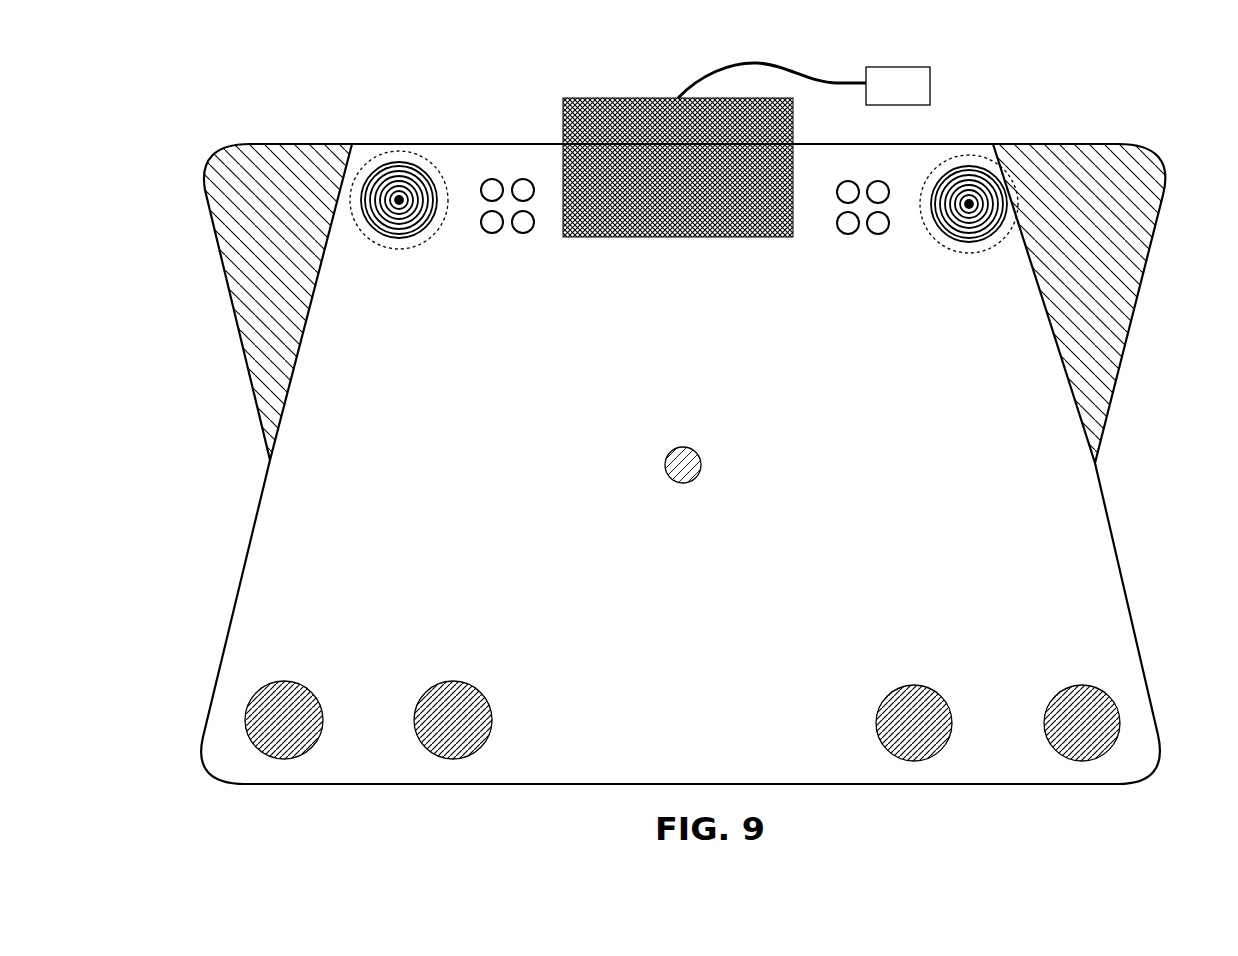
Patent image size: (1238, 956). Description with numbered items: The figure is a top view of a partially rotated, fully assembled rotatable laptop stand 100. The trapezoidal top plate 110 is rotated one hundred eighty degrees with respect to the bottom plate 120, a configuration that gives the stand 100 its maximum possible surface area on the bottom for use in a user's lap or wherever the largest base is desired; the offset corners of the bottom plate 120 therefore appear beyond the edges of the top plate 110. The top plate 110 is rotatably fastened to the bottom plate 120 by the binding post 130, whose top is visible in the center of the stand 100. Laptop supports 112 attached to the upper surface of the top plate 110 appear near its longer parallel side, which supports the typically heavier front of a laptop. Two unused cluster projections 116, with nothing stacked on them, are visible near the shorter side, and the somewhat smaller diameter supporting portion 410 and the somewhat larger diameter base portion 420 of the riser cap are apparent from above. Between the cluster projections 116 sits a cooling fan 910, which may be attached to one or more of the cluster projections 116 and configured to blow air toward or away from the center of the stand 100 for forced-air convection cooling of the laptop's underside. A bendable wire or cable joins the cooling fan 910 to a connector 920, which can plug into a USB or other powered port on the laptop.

The rotatable laptop stand 100 is at (709, 423).
The top plate 110 is at (1090, 563).
The bottom plate 120 is at (1092, 379).
The supporting portion 410 is at (410, 168).
The base portion 420 is at (412, 243).
The cluster projections 116 is at (503, 205).
The cooling fan 910 is at (730, 222).
The connector 920 is at (910, 90).
The binding post 130 is at (690, 470).
The laptop supports 112 is at (467, 712).